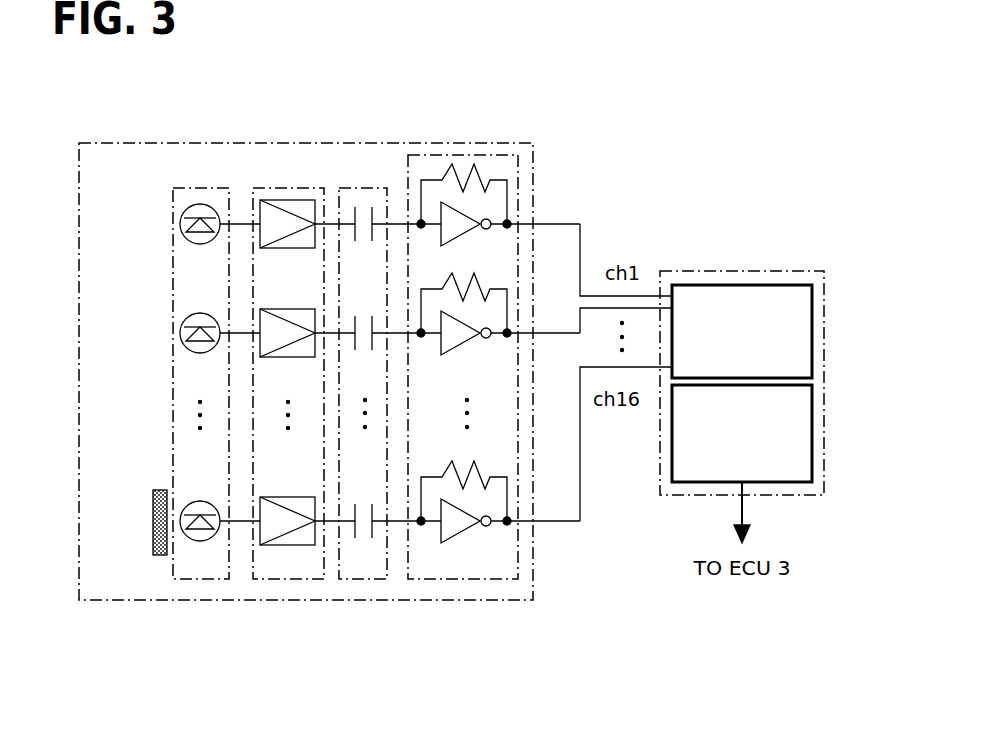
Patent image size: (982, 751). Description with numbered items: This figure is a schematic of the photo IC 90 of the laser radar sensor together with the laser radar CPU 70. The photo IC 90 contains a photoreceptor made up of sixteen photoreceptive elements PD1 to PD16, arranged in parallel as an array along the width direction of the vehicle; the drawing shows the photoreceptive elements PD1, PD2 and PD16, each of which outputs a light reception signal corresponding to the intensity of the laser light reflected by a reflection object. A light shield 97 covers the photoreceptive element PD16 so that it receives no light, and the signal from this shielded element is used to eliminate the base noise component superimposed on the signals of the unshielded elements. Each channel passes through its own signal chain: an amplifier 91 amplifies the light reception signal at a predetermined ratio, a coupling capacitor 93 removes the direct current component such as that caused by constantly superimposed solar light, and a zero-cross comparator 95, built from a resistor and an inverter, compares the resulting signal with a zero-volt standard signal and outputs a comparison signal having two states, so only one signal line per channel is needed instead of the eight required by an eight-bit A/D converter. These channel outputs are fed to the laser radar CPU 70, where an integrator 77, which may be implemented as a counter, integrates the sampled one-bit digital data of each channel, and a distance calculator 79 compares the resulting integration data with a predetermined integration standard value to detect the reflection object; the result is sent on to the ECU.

The photo integrated circuit 90 is at (328, 143).
The amplifier 91 is at (290, 187).
The coupling capacitor 93 is at (366, 187).
The zero-cross comparator 95 is at (466, 154).
The light shield 97 is at (150, 520).
The laser radar CPU 70 is at (743, 271).
The integrator 77 is at (813, 329).
The distance calculator 79 is at (813, 432).
The photoreceptive element PD1 is at (178, 224).
The photoreceptive element PD2 is at (178, 333).
The photoreceptive element PD16 is at (203, 543).